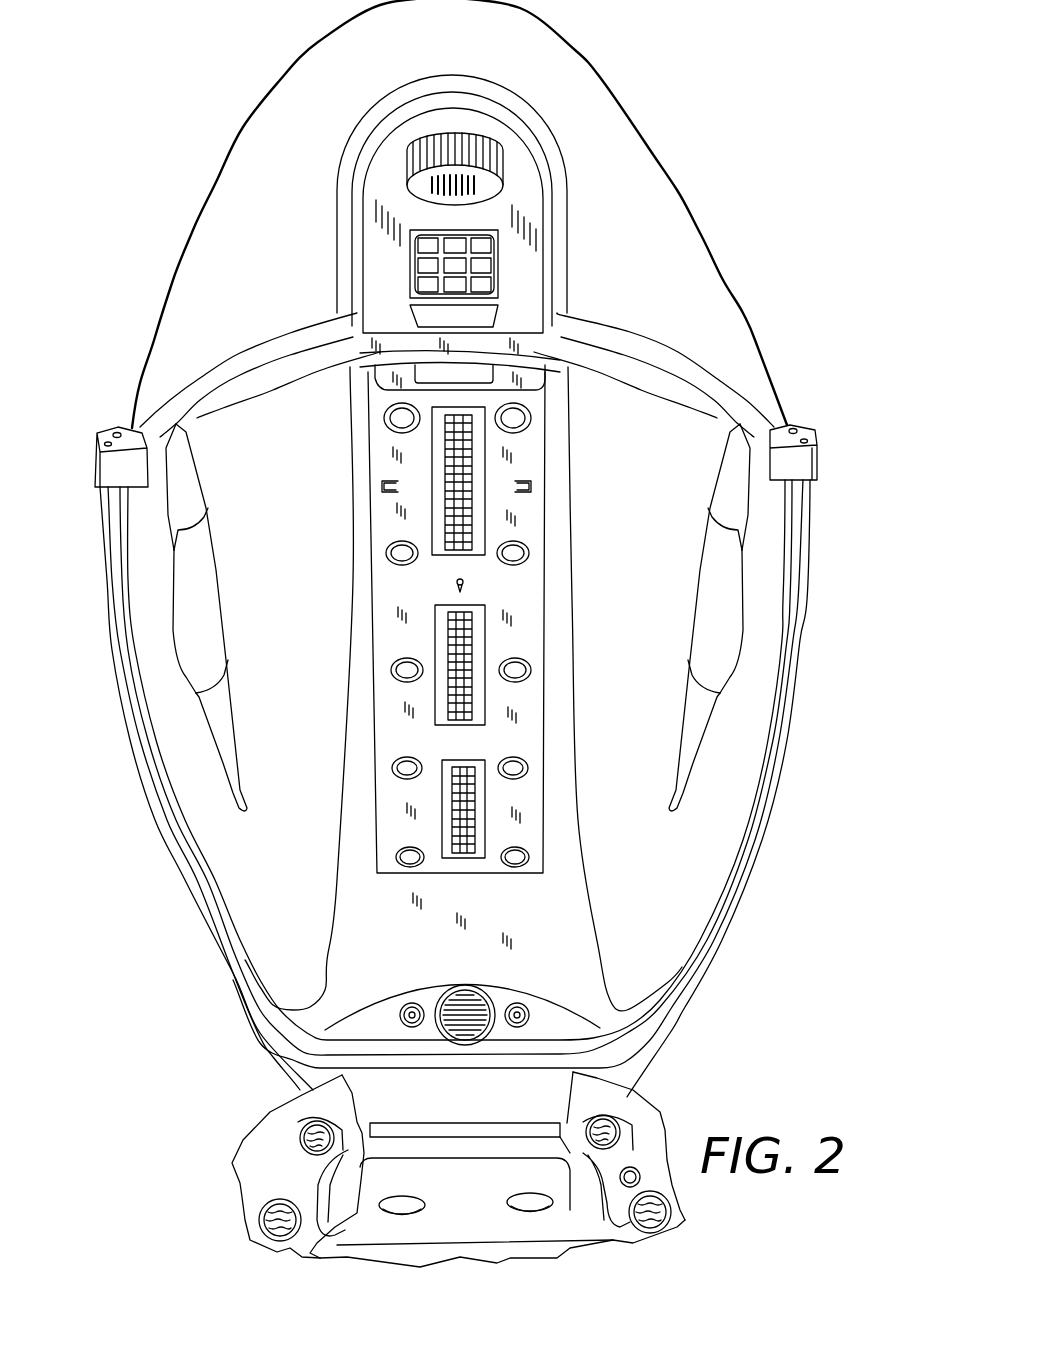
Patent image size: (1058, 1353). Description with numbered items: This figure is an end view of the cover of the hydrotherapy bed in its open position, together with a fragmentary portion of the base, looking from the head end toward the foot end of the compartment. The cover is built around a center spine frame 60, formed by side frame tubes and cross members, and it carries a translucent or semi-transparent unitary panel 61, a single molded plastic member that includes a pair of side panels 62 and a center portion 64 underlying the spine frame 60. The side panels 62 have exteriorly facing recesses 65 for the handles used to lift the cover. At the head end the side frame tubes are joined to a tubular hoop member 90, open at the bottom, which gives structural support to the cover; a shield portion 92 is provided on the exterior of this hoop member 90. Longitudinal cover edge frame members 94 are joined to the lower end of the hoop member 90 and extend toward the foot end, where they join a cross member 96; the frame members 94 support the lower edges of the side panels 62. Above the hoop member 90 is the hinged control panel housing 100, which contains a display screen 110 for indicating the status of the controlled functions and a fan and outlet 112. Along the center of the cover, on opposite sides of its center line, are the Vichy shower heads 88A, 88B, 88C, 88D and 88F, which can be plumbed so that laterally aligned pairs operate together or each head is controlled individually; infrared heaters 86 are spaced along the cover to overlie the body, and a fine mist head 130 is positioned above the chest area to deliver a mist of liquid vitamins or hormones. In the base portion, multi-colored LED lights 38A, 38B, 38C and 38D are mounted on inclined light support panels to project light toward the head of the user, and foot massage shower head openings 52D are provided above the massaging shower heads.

The control panel housing 100 is at (535, 118).
The shield portion 92 is at (653, 216).
The fan and outlet 112 is at (407, 187).
The display screen 110 is at (431, 265).
The hoop member 90 is at (675, 362).
The shower head 88A is at (385, 420).
The shower head 88B is at (386, 555).
The shower head 88C is at (392, 669).
The shower head 88D is at (392, 766).
The shower head 88F is at (395, 852).
The center portion 64 is at (520, 460).
The mist head 130 is at (466, 628).
The infrared heater 86 is at (537, 637).
The side panel 62 is at (688, 570).
The center spine frame 60 is at (568, 662).
The recess 65 is at (200, 627).
The unitary panel 61 is at (735, 750).
The longitudinal cover edge frame member 94 is at (212, 915).
The cross member 96 is at (560, 1069).
The LED light 38A is at (303, 1138).
The LED light 38B is at (625, 1130).
The LED light 38C is at (260, 1220).
The LED light 38D is at (683, 1222).
The foot massage shower head opening 52D is at (393, 1213).